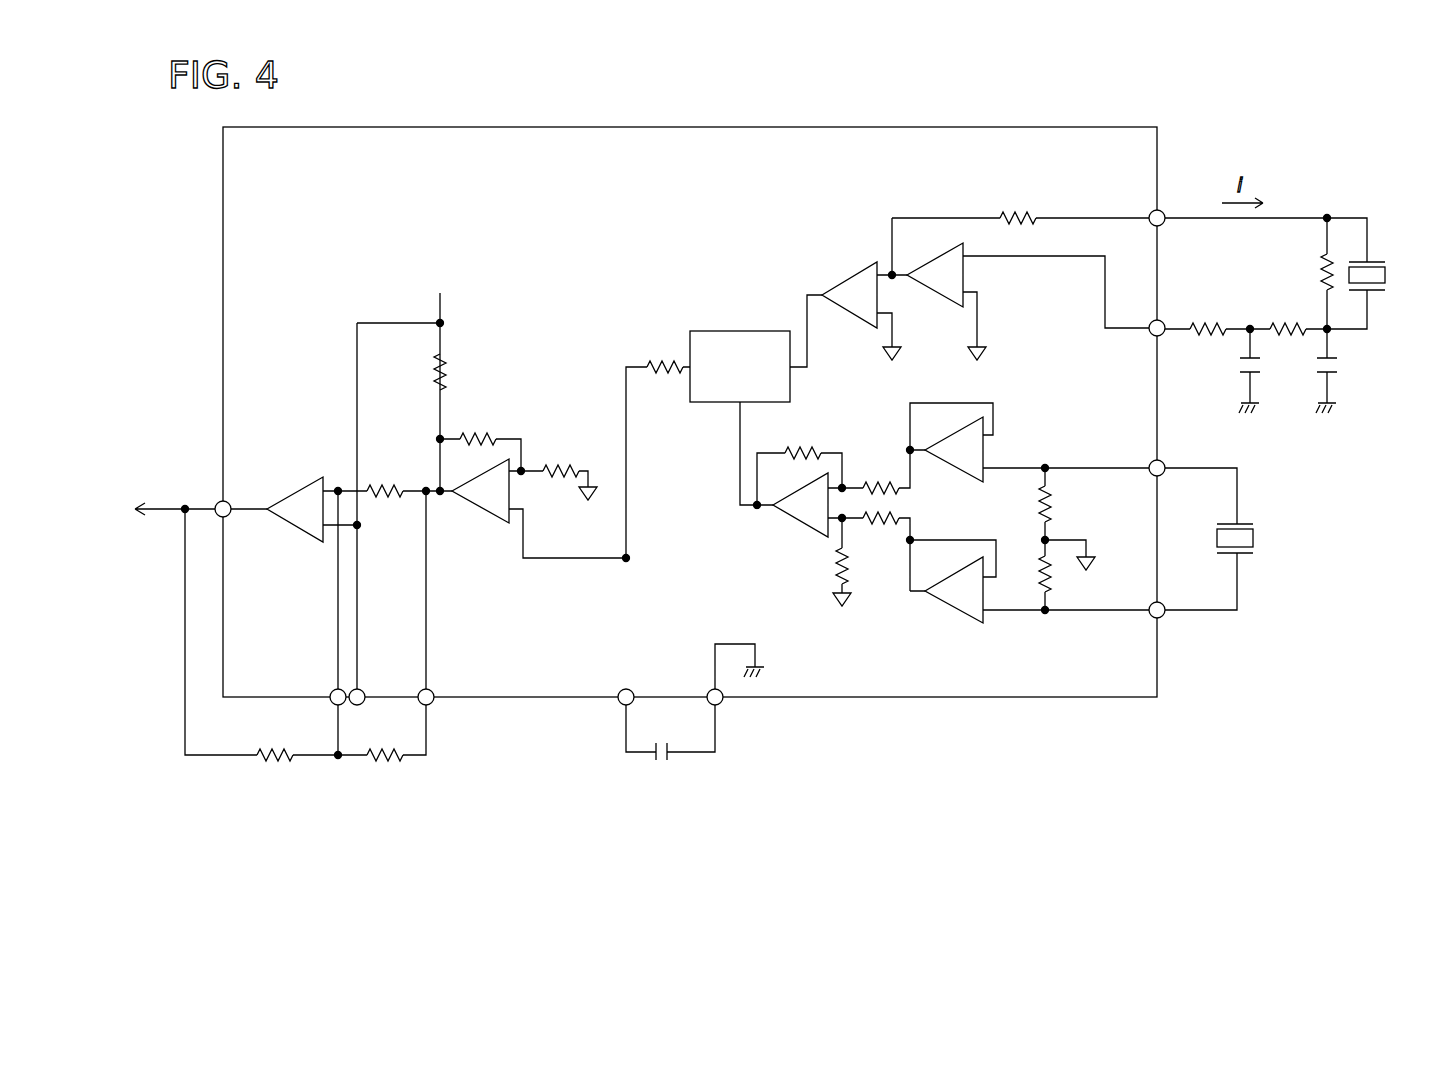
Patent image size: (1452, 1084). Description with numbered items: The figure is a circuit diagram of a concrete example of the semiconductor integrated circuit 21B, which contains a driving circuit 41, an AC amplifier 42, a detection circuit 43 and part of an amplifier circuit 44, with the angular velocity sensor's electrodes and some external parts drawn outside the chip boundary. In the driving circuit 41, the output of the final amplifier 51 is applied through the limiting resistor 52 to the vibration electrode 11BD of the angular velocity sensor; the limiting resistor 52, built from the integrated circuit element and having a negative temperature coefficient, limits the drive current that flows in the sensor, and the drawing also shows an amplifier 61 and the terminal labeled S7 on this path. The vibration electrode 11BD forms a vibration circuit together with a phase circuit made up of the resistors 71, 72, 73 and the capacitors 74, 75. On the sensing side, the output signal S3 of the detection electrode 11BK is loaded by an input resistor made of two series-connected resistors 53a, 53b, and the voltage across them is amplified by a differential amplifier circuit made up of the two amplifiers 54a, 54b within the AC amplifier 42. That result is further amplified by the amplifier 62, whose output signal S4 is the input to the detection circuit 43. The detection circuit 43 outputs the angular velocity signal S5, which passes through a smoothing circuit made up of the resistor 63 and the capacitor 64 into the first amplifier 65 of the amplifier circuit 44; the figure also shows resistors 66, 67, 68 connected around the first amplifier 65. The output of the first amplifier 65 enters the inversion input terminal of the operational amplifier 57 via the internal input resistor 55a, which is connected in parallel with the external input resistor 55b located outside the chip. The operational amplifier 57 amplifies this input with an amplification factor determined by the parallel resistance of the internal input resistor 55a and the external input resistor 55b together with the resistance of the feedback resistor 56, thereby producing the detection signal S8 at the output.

The semiconductor integrated circuit 21B is at (706, 127).
The driving circuit 41 is at (954, 191).
The AC amplifier 42 is at (1065, 446).
The detection circuit 43 is at (702, 331).
The amplifier circuit 44 is at (311, 347).
The final amplifier 51 is at (930, 300).
The limiting resistor 52 is at (1017, 210).
The resistor 53a is at (1058, 505).
The resistor 53b is at (1058, 590).
The amplifier 54a is at (955, 470).
The amplifier 54b is at (957, 615).
The internal input resistor 55a is at (392, 480).
The external input resistor 55b is at (380, 768).
The feedback resistor 56 is at (275, 768).
The operational amplifier 57 is at (291, 478).
The amplifier 61 is at (847, 278).
The amplifier 62 is at (798, 525).
The resistor 63 is at (652, 357).
The capacitor 64 is at (645, 765).
The first amplifier 65 is at (487, 528).
The resistor 66 is at (562, 462).
The resistor 67 is at (470, 432).
The resistor 68 is at (447, 368).
The resistor 71 is at (1204, 311).
The resistor 72 is at (1288, 311).
The resistor 73 is at (1307, 273).
The capacitor 74 is at (1226, 371).
The capacitor 75 is at (1349, 371).
The vibration electrode 11BD is at (1385, 250).
The detection electrode 11BK is at (1258, 532).
The signal S3 is at (1192, 493).
The signal S4 is at (737, 447).
The angular velocity signal S5 is at (680, 378).
The signal S7 is at (1198, 242).
The detection signal S8 is at (173, 508).